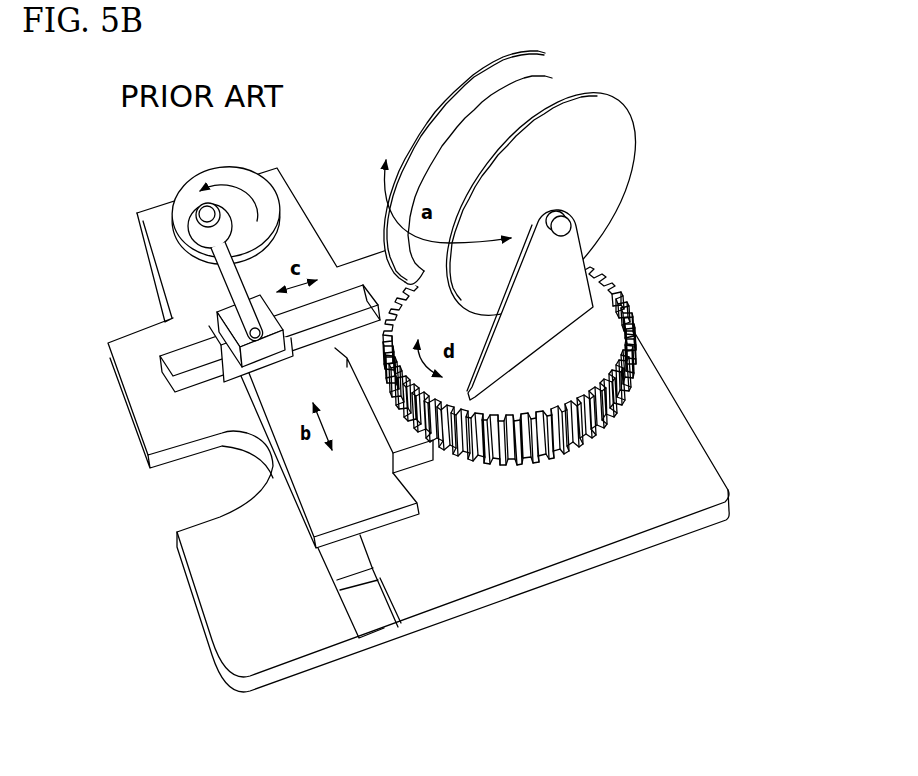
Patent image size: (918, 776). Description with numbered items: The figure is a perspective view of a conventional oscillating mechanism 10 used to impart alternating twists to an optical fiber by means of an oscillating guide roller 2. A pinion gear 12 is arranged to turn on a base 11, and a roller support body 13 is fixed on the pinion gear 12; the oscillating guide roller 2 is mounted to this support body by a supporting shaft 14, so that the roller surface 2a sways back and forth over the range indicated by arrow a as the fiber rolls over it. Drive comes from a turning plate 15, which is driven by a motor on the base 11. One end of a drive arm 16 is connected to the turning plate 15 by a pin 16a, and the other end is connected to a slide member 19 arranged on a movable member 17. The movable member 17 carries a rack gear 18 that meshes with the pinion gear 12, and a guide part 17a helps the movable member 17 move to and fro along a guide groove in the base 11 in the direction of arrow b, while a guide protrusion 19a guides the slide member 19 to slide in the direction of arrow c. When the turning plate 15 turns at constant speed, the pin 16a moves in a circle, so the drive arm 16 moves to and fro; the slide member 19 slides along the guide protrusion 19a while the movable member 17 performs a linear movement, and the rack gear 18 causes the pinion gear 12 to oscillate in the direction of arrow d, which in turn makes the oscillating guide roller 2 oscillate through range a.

The oscillating guide roller 2 is at (633, 119).
The roller surface 2a is at (560, 93).
The oscillating mechanism 10 is at (447, 418).
The base 11 is at (680, 447).
The pinion gear 12 is at (600, 346).
The roller support body 13 is at (570, 290).
The supporting shaft 14 is at (572, 224).
The turning plate 15 is at (243, 178).
The drive arm 16 is at (236, 283).
The pin 16a is at (200, 210).
The movable member 17 is at (417, 505).
The guide part 17a is at (357, 563).
The rack gear 18 is at (417, 458).
The slide member 19 is at (247, 367).
The guide protrusion 19a is at (177, 363).